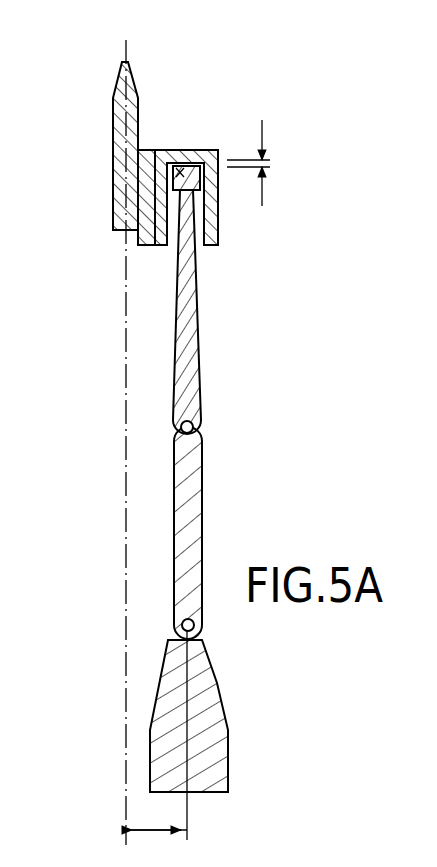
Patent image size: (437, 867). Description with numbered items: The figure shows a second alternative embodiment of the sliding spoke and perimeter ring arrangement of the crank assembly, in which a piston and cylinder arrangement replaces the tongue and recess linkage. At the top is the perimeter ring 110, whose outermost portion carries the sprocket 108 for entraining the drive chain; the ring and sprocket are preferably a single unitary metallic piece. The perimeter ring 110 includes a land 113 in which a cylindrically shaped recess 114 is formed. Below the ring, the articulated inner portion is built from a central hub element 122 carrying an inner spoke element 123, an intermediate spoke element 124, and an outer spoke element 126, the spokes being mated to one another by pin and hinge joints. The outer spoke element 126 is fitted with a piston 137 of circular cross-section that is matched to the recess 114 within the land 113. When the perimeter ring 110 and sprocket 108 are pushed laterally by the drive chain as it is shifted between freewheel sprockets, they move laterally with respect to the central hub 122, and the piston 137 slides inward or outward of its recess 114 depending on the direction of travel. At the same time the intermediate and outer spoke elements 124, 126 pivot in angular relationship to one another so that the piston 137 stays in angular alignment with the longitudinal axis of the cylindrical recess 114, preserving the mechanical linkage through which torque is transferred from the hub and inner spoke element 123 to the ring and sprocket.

The sprocket 108 is at (115, 88).
The perimeter ring 110 is at (145, 248).
The land 113 is at (207, 150).
The piston 137 is at (178, 170).
The recess 114 is at (203, 258).
The outer spoke element 126 is at (198, 347).
The intermediate spoke element 124 is at (202, 512).
The inner spoke element 123 is at (215, 680).
The central hub element 122 is at (244, 763).